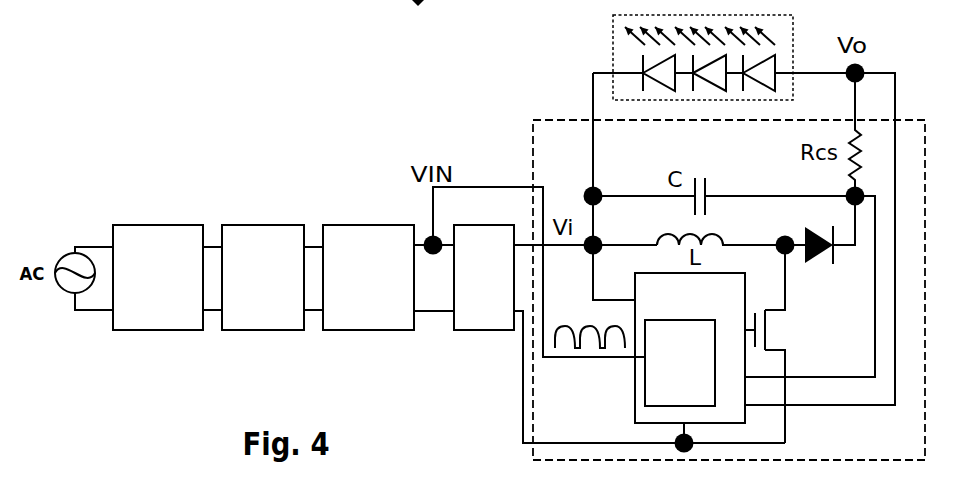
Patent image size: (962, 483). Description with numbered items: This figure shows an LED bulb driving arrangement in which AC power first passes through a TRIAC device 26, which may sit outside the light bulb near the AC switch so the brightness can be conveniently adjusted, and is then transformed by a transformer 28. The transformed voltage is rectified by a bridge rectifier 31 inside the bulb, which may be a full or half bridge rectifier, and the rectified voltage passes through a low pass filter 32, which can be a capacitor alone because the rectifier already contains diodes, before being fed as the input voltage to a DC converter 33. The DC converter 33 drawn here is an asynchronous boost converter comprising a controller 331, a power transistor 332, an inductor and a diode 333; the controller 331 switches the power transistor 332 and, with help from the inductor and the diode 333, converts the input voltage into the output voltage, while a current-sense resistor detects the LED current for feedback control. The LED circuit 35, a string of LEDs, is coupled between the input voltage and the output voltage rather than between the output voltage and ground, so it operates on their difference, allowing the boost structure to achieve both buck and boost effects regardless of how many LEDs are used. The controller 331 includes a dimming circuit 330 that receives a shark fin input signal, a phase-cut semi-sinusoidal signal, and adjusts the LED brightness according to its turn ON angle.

The TRIAC device 26 is at (158, 277).
The transformer 28 is at (263, 277).
The bridge rectifier 31 is at (368, 277).
The low pass filter 32 is at (484, 277).
The DC converter 33 is at (729, 290).
The LED circuit 35 is at (795, 62).
The dimming circuit 330 is at (680, 363).
The controller 331 is at (633, 408).
The power transistor 332 is at (778, 330).
The diode 333 is at (803, 271).